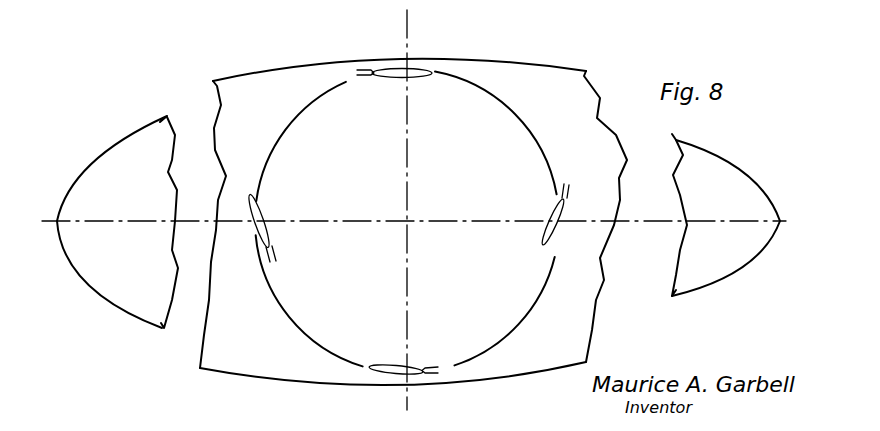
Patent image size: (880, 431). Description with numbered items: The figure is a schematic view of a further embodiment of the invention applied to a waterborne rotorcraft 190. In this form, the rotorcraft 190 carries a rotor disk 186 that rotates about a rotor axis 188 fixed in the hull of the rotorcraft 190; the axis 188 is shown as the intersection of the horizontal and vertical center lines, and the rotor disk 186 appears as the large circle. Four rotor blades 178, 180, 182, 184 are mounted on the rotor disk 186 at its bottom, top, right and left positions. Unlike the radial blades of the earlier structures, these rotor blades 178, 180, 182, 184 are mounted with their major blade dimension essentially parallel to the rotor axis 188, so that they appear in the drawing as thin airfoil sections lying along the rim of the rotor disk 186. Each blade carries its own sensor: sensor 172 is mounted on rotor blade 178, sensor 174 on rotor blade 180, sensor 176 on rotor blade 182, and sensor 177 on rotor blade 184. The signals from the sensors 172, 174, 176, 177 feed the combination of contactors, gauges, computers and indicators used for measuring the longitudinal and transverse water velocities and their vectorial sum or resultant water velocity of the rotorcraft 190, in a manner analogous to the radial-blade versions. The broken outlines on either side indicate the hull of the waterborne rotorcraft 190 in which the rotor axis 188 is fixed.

The sensor 172 is at (447, 358).
The sensor 174 is at (368, 78).
The sensor 176 is at (568, 192).
The sensor 177 is at (270, 250).
The rotor blade 178 is at (398, 367).
The rotor blade 180 is at (412, 68).
The rotor blade 182 is at (551, 224).
The rotor blade 184 is at (265, 209).
The rotor disk 186 is at (530, 313).
The rotor axis 188 is at (412, 220).
The waterborne rotorcraft 190 is at (213, 82).